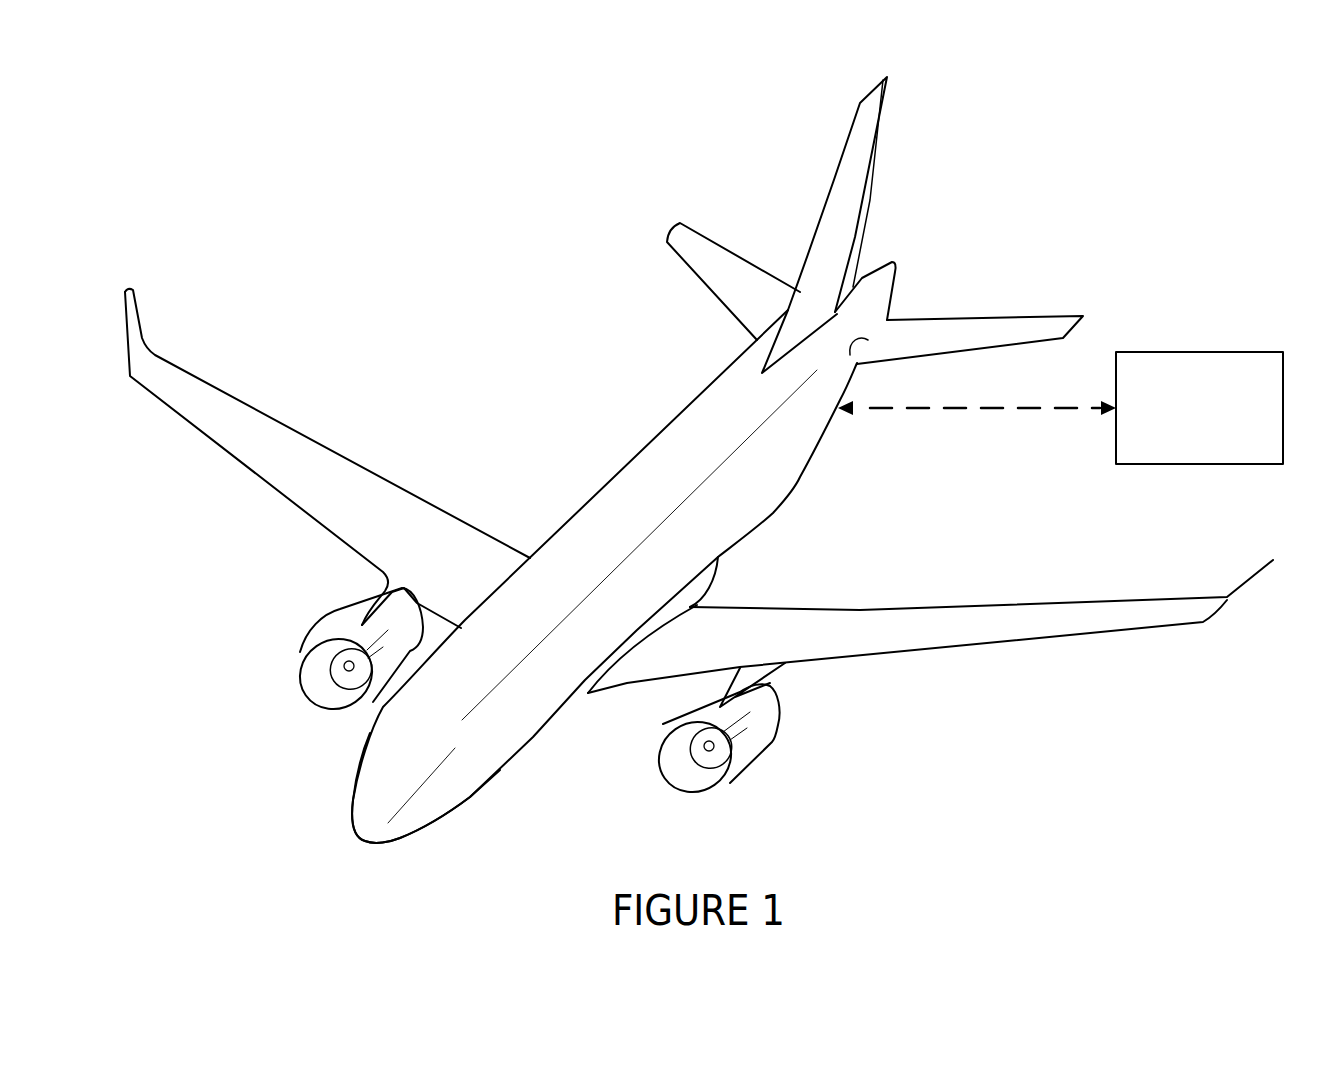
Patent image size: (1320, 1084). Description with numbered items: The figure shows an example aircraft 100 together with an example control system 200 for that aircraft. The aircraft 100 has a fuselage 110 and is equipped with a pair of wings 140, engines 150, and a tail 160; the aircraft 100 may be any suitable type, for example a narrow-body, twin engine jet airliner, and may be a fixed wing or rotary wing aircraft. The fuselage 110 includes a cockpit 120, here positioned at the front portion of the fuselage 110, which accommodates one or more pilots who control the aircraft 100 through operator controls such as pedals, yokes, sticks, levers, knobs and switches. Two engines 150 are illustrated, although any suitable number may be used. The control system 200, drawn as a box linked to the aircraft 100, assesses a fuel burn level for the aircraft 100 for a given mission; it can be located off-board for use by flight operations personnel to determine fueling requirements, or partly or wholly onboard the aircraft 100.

The aircraft 100 is at (188, 200).
The fuselage 110 is at (768, 487).
The cockpit 120 is at (353, 842).
The wings 140 is at (350, 482).
The engines 150 is at (340, 632).
The tail 160 is at (857, 217).
The control system 200 is at (1227, 423).